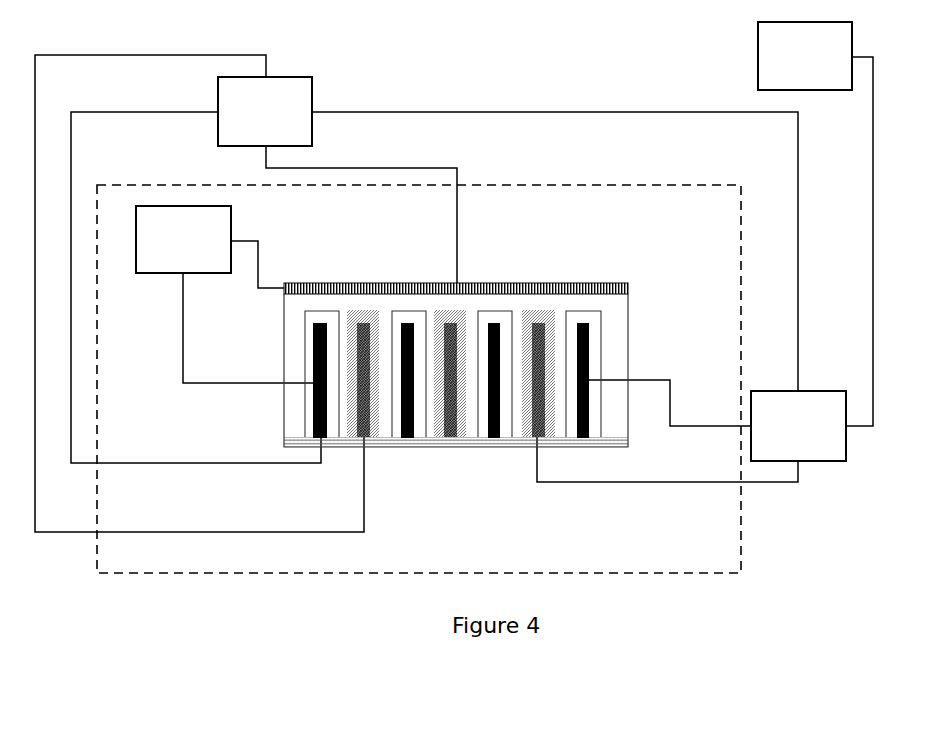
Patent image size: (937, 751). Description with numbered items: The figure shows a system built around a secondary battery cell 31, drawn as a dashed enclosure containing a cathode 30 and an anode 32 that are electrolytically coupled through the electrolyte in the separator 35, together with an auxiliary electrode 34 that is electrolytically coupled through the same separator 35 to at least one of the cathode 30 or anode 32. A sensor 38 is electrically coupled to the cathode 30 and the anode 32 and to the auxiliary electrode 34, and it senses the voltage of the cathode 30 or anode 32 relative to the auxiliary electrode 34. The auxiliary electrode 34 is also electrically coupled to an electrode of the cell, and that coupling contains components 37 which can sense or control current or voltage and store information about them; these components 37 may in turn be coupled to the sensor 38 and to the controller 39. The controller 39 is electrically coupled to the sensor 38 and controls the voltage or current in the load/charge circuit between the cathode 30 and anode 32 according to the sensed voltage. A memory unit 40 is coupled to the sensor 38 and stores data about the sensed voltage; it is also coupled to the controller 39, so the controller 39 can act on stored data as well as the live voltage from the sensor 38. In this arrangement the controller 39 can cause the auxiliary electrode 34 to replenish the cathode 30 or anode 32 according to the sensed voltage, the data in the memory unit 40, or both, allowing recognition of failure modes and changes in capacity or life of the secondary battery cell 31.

The cathode 30 is at (306, 318).
The secondary battery cell 31 is at (723, 224).
The anode 32 is at (467, 436).
The auxiliary electrode 34 is at (585, 283).
The separator 35 is at (613, 338).
The components 37 is at (219, 227).
The sensor 38 is at (300, 104).
The controller 39 is at (834, 417).
The memory unit 40 is at (841, 47).